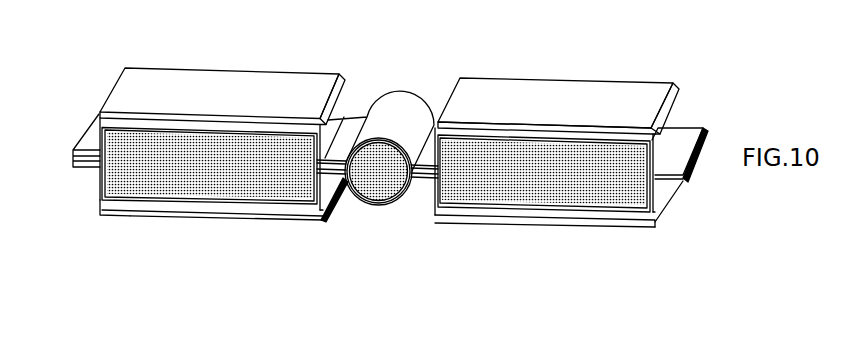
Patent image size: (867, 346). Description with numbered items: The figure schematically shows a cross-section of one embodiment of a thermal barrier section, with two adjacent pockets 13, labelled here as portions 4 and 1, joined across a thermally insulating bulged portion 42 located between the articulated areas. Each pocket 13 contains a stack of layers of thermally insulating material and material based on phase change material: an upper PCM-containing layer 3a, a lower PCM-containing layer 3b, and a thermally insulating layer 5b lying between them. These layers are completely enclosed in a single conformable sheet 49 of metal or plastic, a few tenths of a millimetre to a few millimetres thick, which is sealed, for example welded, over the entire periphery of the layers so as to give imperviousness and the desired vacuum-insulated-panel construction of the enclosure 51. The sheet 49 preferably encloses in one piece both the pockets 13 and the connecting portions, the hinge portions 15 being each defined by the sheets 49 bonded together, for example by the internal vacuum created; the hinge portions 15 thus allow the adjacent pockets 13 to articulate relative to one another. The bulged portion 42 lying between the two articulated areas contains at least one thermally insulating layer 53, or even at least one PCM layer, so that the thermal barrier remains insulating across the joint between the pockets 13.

The battery cell 1 is at (460, 242).
The battery cell 4 is at (209, 108).
The PCM-containing layer 3a is at (260, 128).
The PCM-containing layer 3b is at (238, 205).
The thermally insulating layer 5b is at (117, 133).
The pocket 13 is at (195, 212).
The hinge portion 15 is at (90, 142).
The bulged portion 42 is at (385, 207).
The conformable sheet 49 is at (540, 92).
The enclosure 51 is at (115, 217).
The thermally insulating layer 53 is at (390, 160).